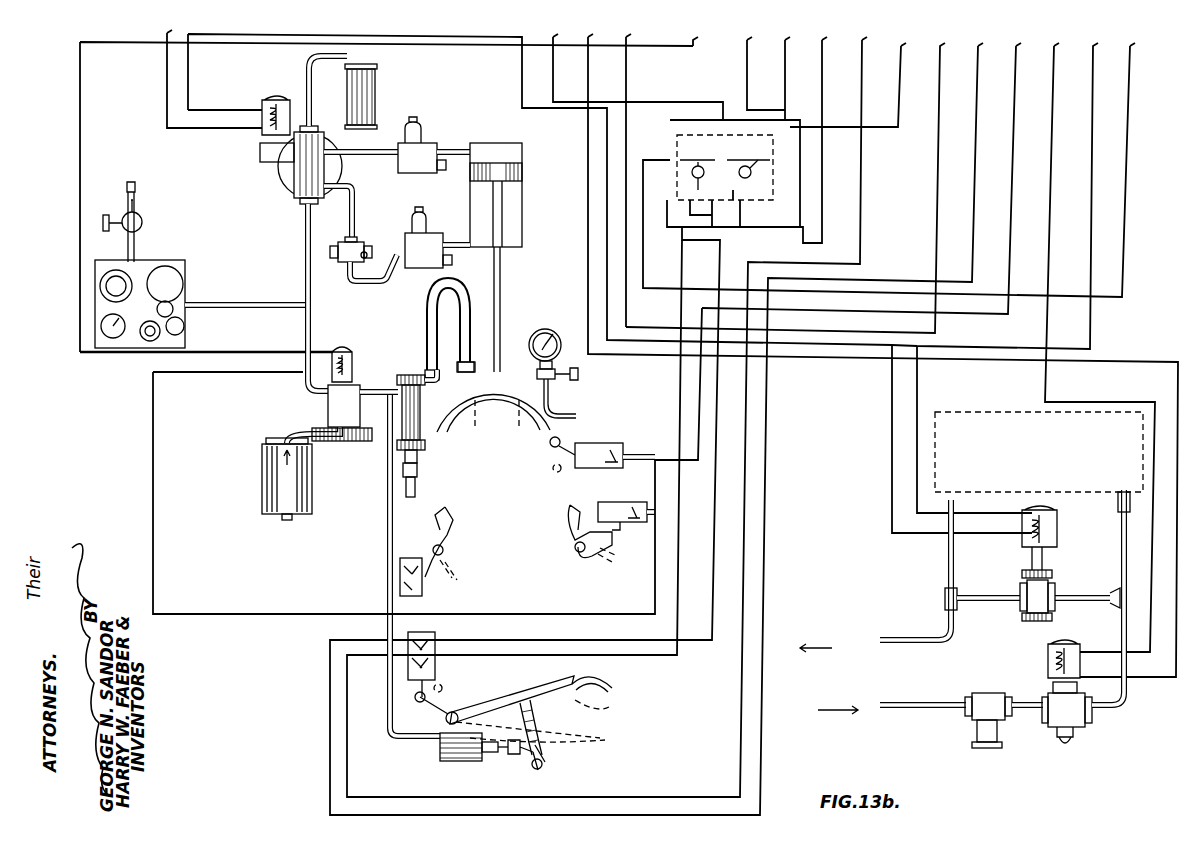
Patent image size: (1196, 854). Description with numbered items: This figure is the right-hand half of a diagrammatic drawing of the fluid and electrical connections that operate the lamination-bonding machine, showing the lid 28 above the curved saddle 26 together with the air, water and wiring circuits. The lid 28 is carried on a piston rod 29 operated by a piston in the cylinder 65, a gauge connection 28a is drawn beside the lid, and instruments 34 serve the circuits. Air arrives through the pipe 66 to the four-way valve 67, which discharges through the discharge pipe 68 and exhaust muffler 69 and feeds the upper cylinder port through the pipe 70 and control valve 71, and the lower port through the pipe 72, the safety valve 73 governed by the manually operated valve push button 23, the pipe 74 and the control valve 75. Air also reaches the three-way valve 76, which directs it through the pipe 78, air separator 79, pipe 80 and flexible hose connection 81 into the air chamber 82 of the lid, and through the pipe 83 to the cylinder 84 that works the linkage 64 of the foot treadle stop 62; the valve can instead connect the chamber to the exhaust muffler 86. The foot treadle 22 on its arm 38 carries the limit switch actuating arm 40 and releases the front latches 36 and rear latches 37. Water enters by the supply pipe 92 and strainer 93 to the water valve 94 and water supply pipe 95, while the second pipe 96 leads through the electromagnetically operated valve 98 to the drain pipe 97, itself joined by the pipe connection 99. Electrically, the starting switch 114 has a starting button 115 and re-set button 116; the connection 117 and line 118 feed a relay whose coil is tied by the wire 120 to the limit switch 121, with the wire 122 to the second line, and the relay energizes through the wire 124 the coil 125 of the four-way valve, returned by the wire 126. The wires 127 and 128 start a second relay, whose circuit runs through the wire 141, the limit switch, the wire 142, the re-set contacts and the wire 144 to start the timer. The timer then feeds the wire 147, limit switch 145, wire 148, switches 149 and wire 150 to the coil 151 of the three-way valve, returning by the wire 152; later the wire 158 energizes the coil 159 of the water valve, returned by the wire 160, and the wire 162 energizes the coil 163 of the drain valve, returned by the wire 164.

The foot treadle 22 is at (605, 688).
The manually operated valve push button 23 is at (375, 243).
The curved saddle 26 is at (997, 404).
The vertically movable lid 28 is at (545, 354).
The gauge connection 28a is at (578, 420).
The piston rod 29 is at (501, 301).
The instruments 34 is at (183, 262).
The front latches 36 is at (566, 531).
The rear latches 37 is at (455, 510).
The arm 38 is at (522, 698).
The limit switch actuating arm 40 is at (428, 713).
The foot treadle stop 62 is at (546, 727).
The linkage 64 is at (522, 768).
The cylinder 65 is at (523, 208).
The pipe 66 is at (256, 302).
The four-way valve 67 is at (298, 178).
The discharge pipe 68 is at (313, 111).
The exhaust muffler 69 is at (378, 88).
The pipe 70 is at (361, 163).
The control valve 71 is at (424, 142).
The pipe 72 is at (356, 212).
The safety valve 73 is at (338, 267).
The pipe 74 is at (352, 284).
The control valve 75 is at (428, 233).
The three-way valve 76 is at (352, 442).
The pipe 78 is at (368, 385).
The air separator 79 is at (425, 430).
The pipe 80 is at (428, 380).
The flexible hose connection 81 is at (426, 318).
The air chamber 82 is at (493, 415).
The pipe 83 is at (387, 515).
The cylinder 84 is at (440, 762).
The exhaust muffler 86 is at (268, 508).
The supply pipe 92 is at (905, 710).
The strainer 93 is at (975, 714).
The water valve 94 is at (1068, 716).
The water supply pipe 95 is at (1120, 556).
The second pipe 96 is at (1074, 595).
The drain pipe 97 is at (902, 628).
The electromagnetically operated valve 98 is at (1020, 608).
The pipe connection 99 is at (957, 567).
The starting switch 114 is at (774, 168).
The starting button 115 is at (690, 166).
The re-set button 116 is at (752, 157).
The connection 117 is at (553, 90).
The line 118 is at (1129, 80).
The wire 120 is at (977, 83).
The limit switch 121 is at (420, 632).
The wire 122 is at (786, 86).
The wire 124 is at (520, 97).
The coil 125 is at (283, 95).
The wire 126 is at (167, 108).
The wire 127 is at (823, 86).
The wire 128 is at (901, 83).
The wire 141 is at (861, 86).
The wire 142 is at (646, 657).
The wire 144 is at (748, 86).
The limit switch 145 is at (580, 462).
The wire 147 is at (1016, 83).
The wire 148 is at (665, 455).
The switches 149 is at (625, 512).
The wire 150 is at (237, 614).
The coil 151 is at (350, 348).
The wire 152 is at (138, 356).
The wire 158 is at (1055, 83).
The coil 159 is at (1046, 666).
The wire 160 is at (589, 90).
The wire 162 is at (1093, 83).
The coil 163 is at (1058, 525).
The wire 164 is at (627, 91).